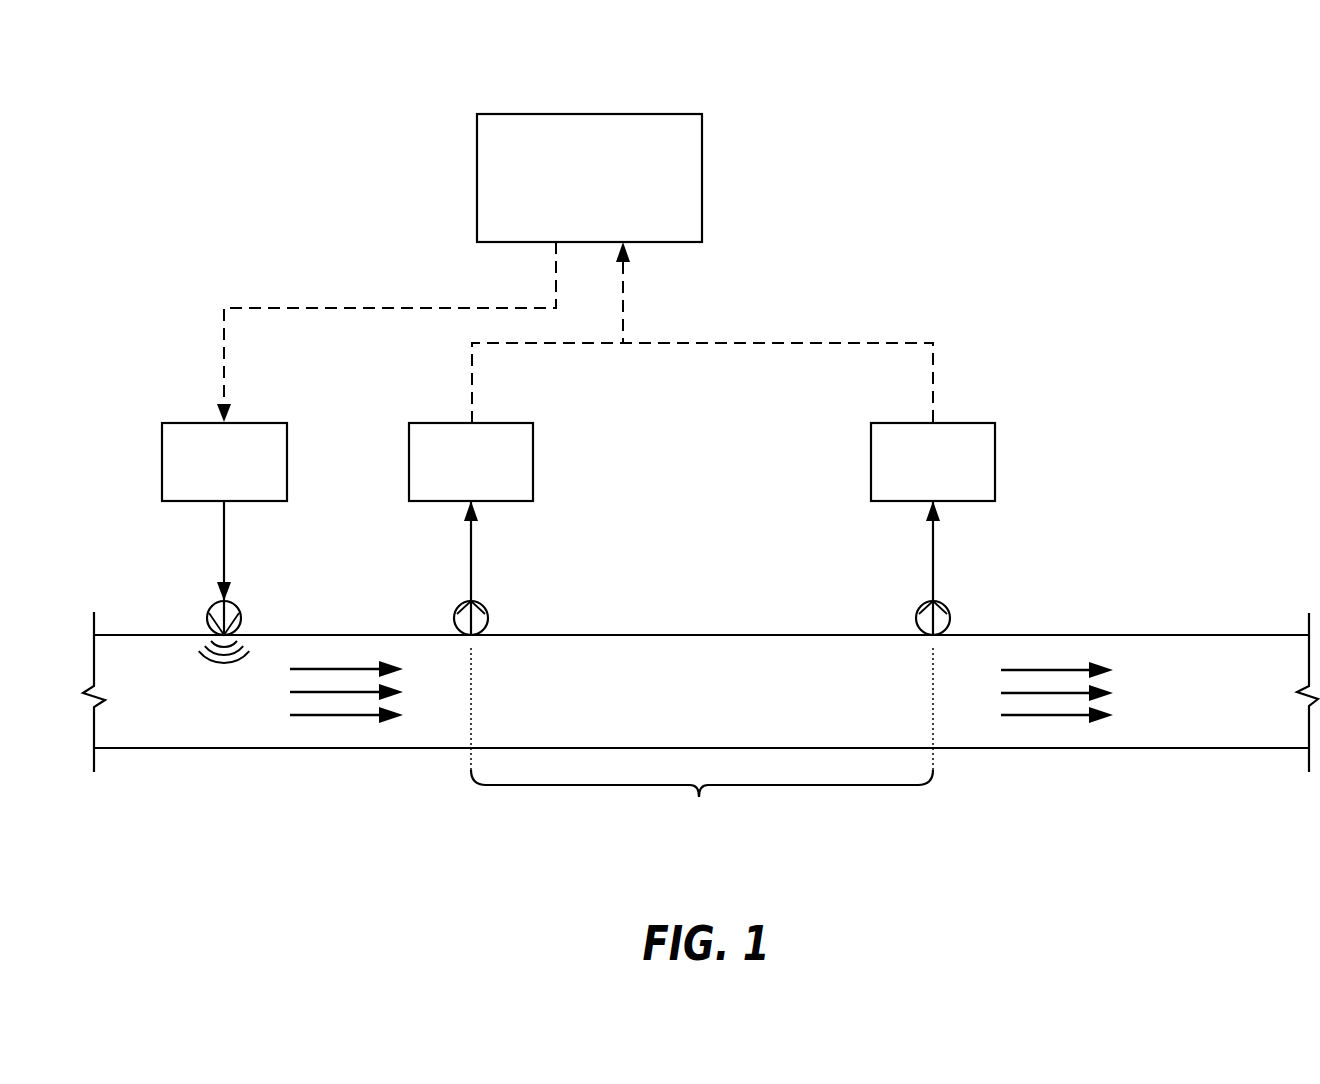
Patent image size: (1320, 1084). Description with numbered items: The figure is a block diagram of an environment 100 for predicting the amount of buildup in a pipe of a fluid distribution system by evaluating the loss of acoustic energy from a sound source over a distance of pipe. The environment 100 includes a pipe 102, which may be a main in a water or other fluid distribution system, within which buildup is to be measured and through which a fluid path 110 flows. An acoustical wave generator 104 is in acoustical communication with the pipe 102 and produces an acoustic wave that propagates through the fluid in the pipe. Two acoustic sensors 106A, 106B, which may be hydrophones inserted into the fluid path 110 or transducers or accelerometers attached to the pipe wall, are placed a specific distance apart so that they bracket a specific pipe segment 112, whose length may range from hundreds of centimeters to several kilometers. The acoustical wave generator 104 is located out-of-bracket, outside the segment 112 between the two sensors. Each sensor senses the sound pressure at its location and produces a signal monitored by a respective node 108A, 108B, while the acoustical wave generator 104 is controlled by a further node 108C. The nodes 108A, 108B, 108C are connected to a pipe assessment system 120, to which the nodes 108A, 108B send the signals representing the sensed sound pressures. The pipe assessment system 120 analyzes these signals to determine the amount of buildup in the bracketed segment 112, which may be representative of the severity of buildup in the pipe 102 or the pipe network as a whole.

The environment 100 is at (1082, 79).
The pipe 102 is at (153, 645).
The acoustical wave generator 104 is at (231, 612).
The acoustic sensor 106A is at (468, 607).
The acoustic sensor 106B is at (930, 607).
The node 108A is at (448, 487).
The node 108B is at (910, 487).
The node 108C is at (201, 487).
The fluid path 110 is at (223, 702).
The pipe segment 112 is at (702, 739).
The pipe assessment system 120 is at (573, 217).